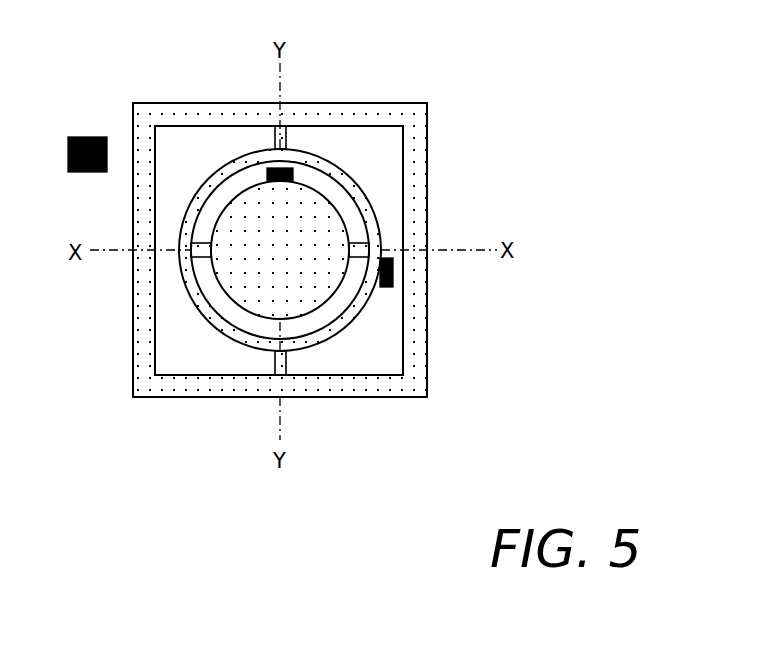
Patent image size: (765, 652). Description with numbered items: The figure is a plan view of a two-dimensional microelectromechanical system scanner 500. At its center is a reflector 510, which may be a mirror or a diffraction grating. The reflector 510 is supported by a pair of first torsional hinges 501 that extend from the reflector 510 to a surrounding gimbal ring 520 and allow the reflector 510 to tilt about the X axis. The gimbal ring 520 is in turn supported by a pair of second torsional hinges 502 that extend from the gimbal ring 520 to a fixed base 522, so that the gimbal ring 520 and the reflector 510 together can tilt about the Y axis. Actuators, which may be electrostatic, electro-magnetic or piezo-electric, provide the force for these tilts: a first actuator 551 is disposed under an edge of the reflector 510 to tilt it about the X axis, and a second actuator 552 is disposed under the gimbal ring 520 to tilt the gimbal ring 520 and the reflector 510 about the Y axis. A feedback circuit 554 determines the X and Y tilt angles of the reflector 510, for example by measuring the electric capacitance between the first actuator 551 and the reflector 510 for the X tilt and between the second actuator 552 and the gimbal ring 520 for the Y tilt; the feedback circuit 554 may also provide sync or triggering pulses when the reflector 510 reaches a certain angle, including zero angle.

The two-dimensional MEMS scanner 500 is at (586, 97).
The first torsional hinges 501 is at (195, 252).
The second torsional hinges 502 is at (275, 150).
The reflector 510 is at (303, 261).
The gimbal ring 520 is at (362, 193).
The fixed base 522 is at (415, 368).
The first actuator 551 is at (284, 168).
The second actuator 552 is at (393, 278).
The feedback circuit 554 is at (84, 137).